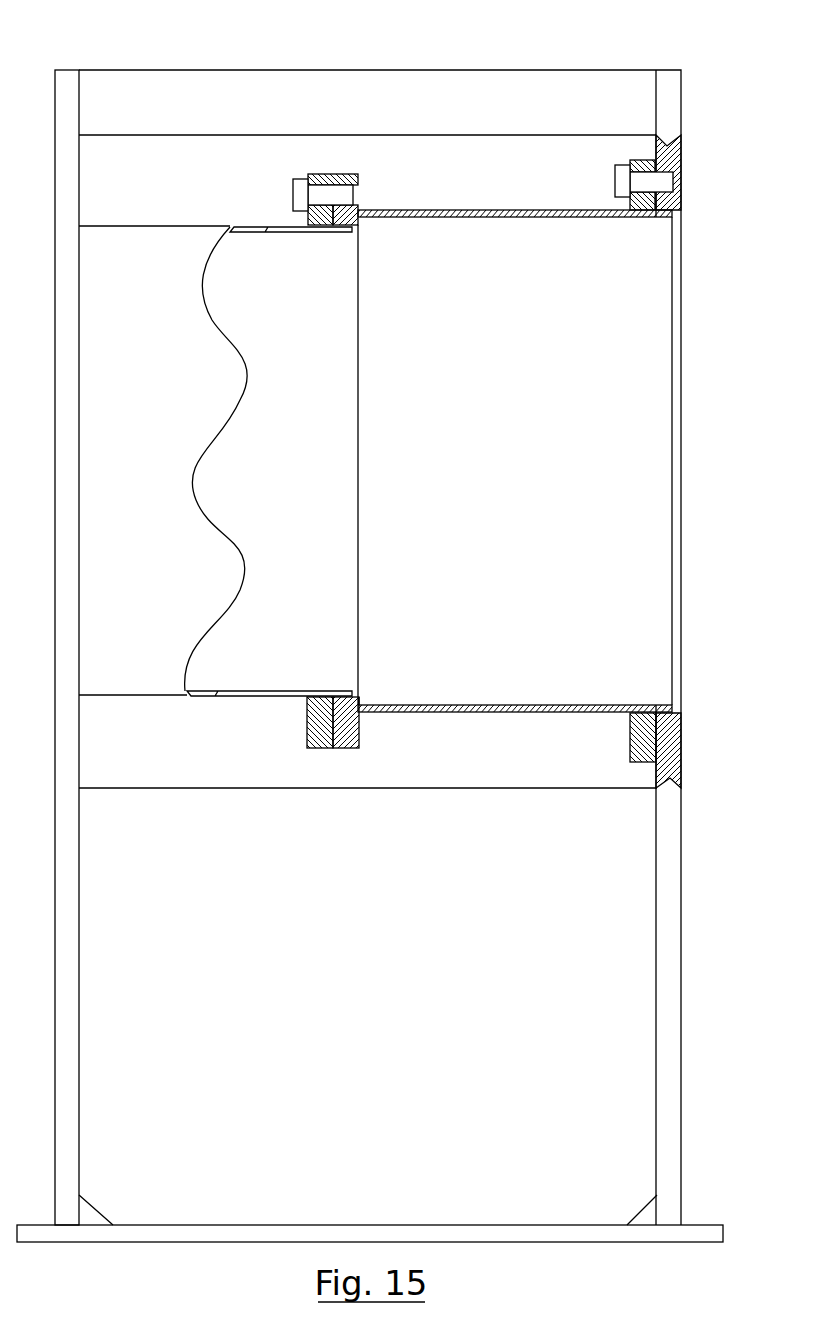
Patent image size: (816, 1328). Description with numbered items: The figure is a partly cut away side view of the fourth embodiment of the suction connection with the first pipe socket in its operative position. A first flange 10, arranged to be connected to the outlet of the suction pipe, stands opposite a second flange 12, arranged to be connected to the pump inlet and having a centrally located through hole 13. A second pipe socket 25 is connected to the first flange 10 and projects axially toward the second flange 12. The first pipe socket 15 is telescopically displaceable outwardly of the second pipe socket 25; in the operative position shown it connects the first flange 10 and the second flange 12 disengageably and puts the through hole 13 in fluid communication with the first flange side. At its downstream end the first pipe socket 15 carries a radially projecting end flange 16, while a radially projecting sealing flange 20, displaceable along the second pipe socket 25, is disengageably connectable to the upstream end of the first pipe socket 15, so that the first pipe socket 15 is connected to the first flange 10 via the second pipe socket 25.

The first flange 10 is at (67, 83).
The second flange 12 is at (671, 85).
The through hole 13 is at (682, 427).
The first pipe socket 15 is at (520, 692).
The end flange 16 is at (640, 198).
The sealing flange 20 is at (323, 226).
The second pipe socket 25 is at (152, 697).